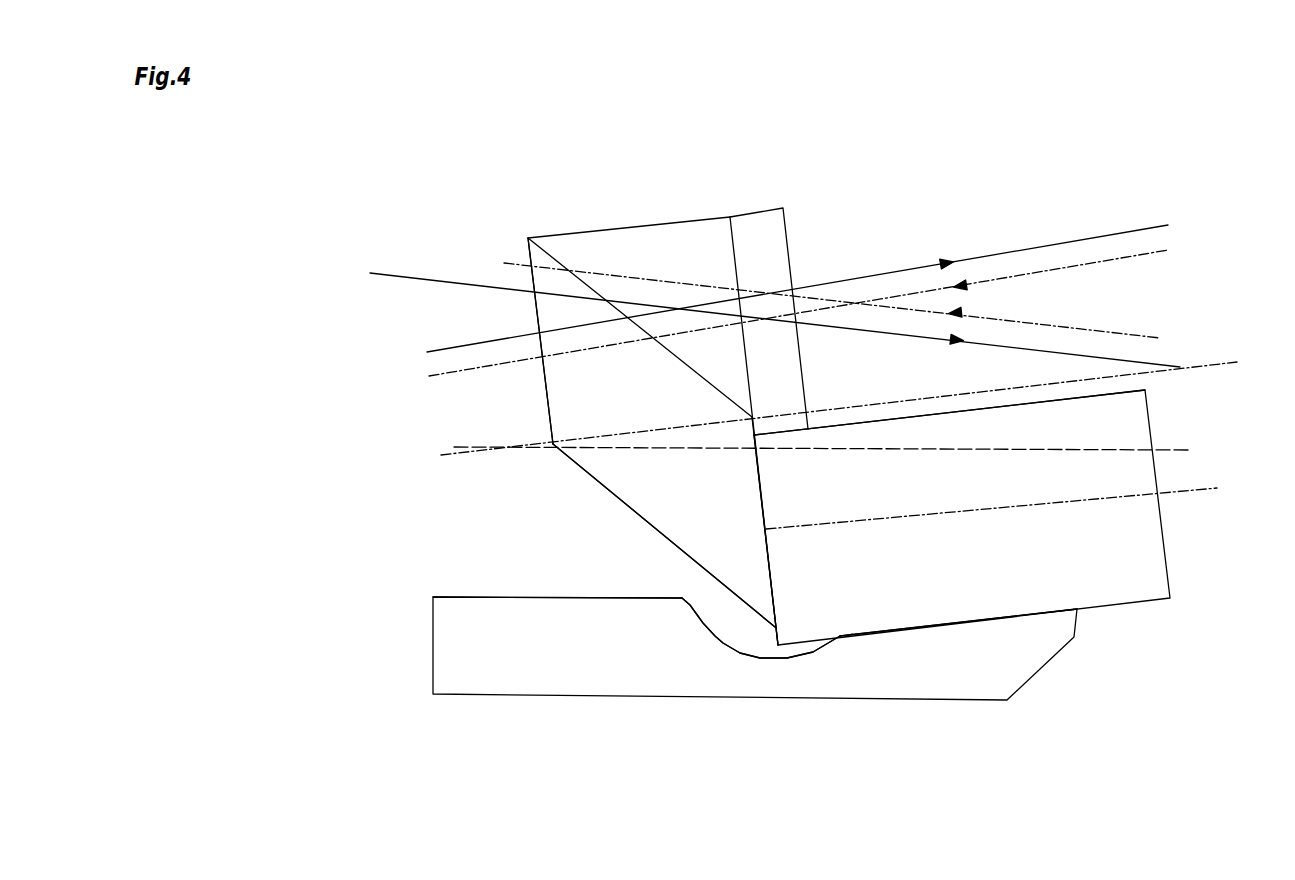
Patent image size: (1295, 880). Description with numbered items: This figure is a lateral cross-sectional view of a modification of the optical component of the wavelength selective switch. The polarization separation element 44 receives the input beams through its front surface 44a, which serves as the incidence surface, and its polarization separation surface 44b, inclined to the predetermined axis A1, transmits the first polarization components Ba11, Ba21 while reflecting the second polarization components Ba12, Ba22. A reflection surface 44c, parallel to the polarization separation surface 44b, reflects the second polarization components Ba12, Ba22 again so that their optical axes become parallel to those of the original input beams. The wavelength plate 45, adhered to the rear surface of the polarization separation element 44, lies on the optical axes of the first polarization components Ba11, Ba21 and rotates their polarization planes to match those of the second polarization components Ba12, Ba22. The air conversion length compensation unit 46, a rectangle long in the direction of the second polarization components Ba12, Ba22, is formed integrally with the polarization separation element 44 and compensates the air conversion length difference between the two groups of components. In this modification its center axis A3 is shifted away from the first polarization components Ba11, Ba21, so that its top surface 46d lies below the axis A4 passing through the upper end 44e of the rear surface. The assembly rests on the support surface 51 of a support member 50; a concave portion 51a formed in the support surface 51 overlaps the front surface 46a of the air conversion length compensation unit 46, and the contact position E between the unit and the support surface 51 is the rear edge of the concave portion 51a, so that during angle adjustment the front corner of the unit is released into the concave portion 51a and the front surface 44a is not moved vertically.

The polarization separation element 44 is at (653, 222).
The front surface 44a is at (545, 388).
The polarization separation surface 44b is at (677, 358).
The reflection surface 44c is at (662, 531).
The upper end of the rear surface 44e is at (746, 422).
The wavelength plate 45 is at (739, 212).
The air conversion length compensation unit 46 is at (1170, 556).
The front surface of the air conversion length compensation unit 46a is at (771, 575).
The top surface of the air conversion length compensation unit 46d is at (862, 423).
The support member 50 is at (630, 698).
The support surface 51 is at (580, 597).
The concave portion 51a is at (745, 636).
The contact position E is at (845, 637).
The predetermined axis A1 is at (913, 456).
The center axis of the air conversion length compensation unit A3 is at (1217, 487).
The axis passing through the upper end of the rear surface A4 is at (1230, 360).
The first polarization component of input beam Ba1 Ba11 is at (1053, 247).
The second polarization component of input beam Ba1 Ba12 is at (1143, 253).
The first polarization component of input beam Ba2 Ba21 is at (1125, 356).
The second polarization component of input beam Ba2 Ba22 is at (1033, 322).